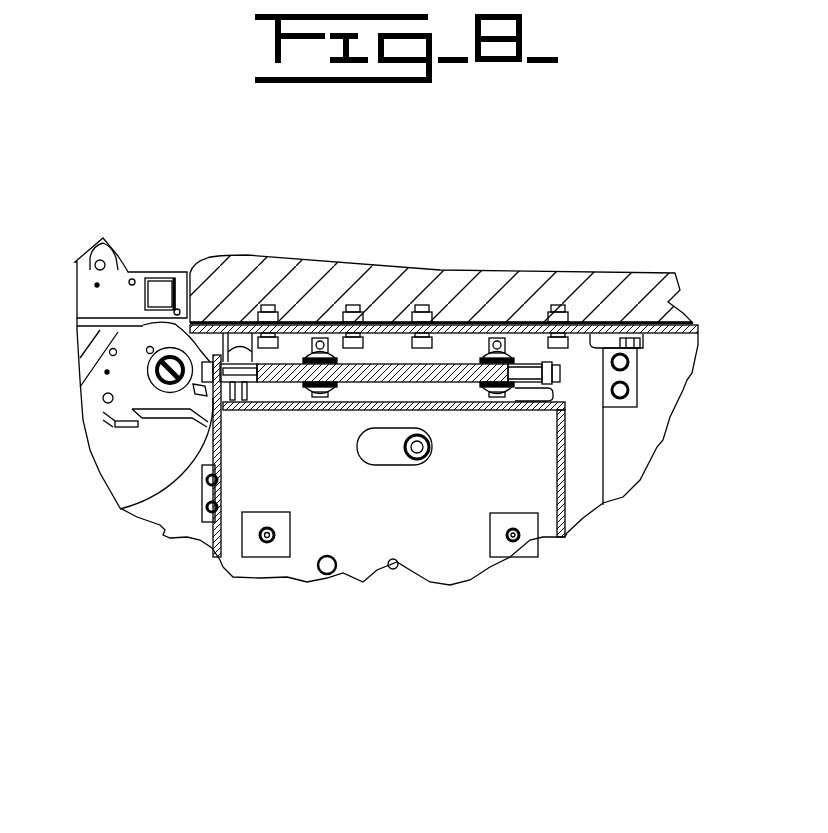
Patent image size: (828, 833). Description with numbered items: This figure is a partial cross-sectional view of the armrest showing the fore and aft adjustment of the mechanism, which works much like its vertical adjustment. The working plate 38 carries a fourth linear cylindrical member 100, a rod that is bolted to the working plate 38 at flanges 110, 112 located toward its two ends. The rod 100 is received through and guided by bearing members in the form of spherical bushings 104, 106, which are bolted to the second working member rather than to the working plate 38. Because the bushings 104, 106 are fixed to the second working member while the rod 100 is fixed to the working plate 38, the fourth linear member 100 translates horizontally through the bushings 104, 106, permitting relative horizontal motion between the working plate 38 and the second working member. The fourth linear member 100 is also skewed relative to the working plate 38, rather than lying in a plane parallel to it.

The working plate 38 is at (462, 570).
The fourth linear cylindrical member 100 is at (278, 384).
The spherical bushing 104 is at (317, 397).
The spherical bushing 106 is at (503, 398).
The flange 110 is at (120, 508).
The flange 112 is at (558, 391).